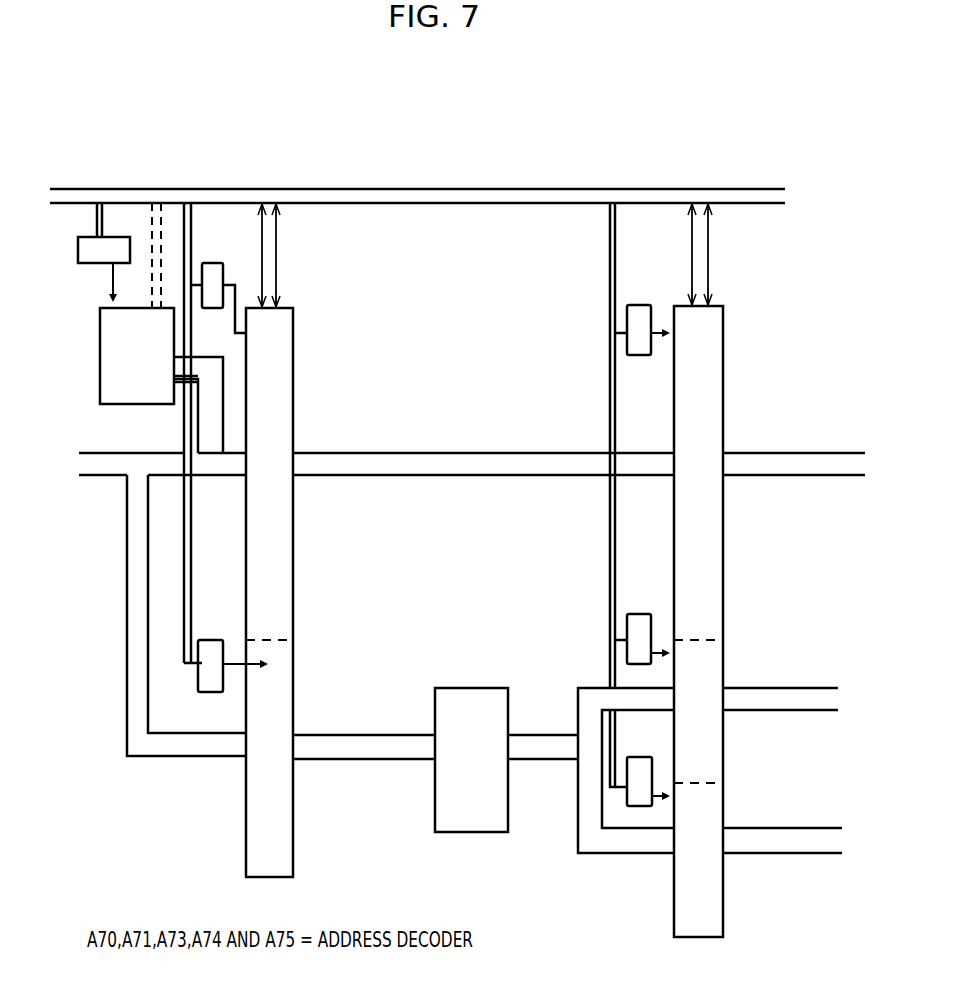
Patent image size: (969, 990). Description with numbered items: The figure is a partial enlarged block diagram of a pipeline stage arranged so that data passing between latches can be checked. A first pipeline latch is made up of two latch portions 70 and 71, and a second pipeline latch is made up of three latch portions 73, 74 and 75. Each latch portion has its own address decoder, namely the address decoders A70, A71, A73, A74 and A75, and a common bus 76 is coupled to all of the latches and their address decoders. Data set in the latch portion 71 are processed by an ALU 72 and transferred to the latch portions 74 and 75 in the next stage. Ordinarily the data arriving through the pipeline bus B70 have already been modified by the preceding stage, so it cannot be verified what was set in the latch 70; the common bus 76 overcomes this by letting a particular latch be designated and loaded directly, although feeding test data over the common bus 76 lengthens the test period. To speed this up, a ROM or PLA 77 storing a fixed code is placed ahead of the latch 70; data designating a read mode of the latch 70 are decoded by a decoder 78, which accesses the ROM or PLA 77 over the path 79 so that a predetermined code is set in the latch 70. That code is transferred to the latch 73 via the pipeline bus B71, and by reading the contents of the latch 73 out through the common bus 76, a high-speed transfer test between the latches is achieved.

The latch portion 70 is at (295, 355).
The latch portion 71 is at (290, 874).
The ALU 72 is at (461, 688).
The latch portion 73 is at (725, 356).
The latch portion 74 is at (725, 666).
The latch portion 75 is at (727, 804).
The common bus 76 is at (430, 189).
The ROM or PLA 77 is at (100, 347).
The decoder 78 is at (95, 248).
The address line 79 is at (150, 290).
The pipeline bus B70 is at (98, 457).
The pipeline bus B71 is at (377, 457).
The address decoder A70 is at (216, 263).
The address decoder A71 is at (211, 640).
The address decoder A73 is at (639, 305).
The address decoder A74 is at (637, 614).
The address decoder A75 is at (640, 757).